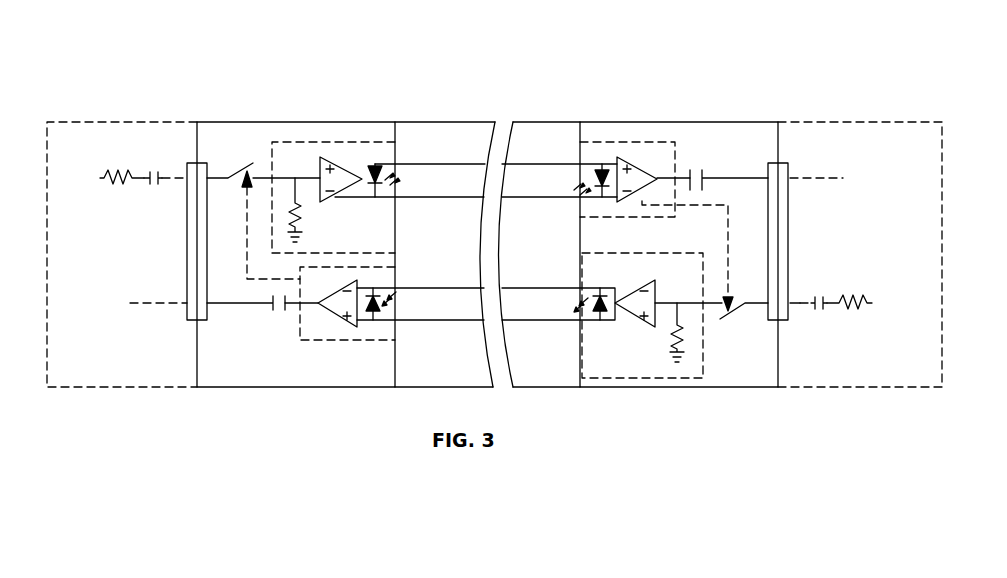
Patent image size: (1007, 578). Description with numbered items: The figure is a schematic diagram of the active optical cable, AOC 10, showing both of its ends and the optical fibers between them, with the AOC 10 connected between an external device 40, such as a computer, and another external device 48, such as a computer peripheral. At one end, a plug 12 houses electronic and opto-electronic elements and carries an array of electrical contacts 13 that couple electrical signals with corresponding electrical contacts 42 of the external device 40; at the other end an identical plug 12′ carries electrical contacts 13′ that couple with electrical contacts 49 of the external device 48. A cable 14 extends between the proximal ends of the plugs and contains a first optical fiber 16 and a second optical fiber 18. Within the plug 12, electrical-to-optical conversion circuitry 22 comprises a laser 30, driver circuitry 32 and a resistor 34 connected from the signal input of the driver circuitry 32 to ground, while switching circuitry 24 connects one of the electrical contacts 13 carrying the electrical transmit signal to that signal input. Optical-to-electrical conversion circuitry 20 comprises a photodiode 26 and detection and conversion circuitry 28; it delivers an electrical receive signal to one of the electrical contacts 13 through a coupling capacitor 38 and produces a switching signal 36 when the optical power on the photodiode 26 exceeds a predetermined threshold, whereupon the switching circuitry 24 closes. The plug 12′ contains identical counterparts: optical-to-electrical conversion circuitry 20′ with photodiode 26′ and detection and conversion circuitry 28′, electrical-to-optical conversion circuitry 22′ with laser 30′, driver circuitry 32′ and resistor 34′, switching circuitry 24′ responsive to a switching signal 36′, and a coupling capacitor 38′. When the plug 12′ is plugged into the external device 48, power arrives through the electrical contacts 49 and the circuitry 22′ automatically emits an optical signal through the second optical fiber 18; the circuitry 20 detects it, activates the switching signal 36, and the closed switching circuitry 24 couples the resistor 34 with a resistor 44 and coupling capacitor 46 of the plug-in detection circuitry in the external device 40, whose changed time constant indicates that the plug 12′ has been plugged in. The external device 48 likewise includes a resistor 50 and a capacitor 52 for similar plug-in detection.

The AOC 10 is at (534, 66).
The plug 12 is at (224, 122).
The plug 12′ is at (729, 122).
The electrical contacts 13 is at (202, 321).
The electrical contacts 13′ is at (772, 322).
The cable 14 is at (454, 122).
The first optical fiber 16 is at (464, 198).
The second optical fiber 18 is at (482, 320).
The optical-to-electrical conversion circuitry 20 is at (354, 340).
The optical-to-electrical conversion circuitry 20′ is at (619, 142).
The electrical-to-optical conversion circuitry 22 is at (296, 142).
The electrical-to-optical conversion circuitry 22′ is at (612, 378).
The switching circuitry 24 is at (244, 166).
The switching circuitry 24′ is at (722, 320).
The photodiode 26 is at (380, 292).
The photodiode 26′ is at (598, 168).
The detection and conversion circuitry 28 is at (340, 326).
The detection and conversion circuitry 28′ is at (632, 202).
The laser 30 is at (385, 169).
The laser 30′ is at (599, 318).
The driver circuitry 32 is at (332, 157).
The driver circuitry 32′ is at (657, 280).
The resistor 34 is at (306, 212).
The resistor 34′ is at (676, 352).
The switching signal 36 is at (243, 232).
The switching signal 36′ is at (728, 216).
The coupling capacitor 38 is at (279, 312).
The coupling capacitor 38′ is at (698, 170).
The external device 40 is at (119, 122).
The electrical contacts 42 is at (192, 321).
The resistor 44 is at (120, 186).
The coupling capacitor 46 is at (156, 186).
The external device 48 is at (860, 122).
The electrical contacts 49 is at (785, 322).
The resistor 50 is at (856, 298).
The capacitor 52 is at (820, 298).